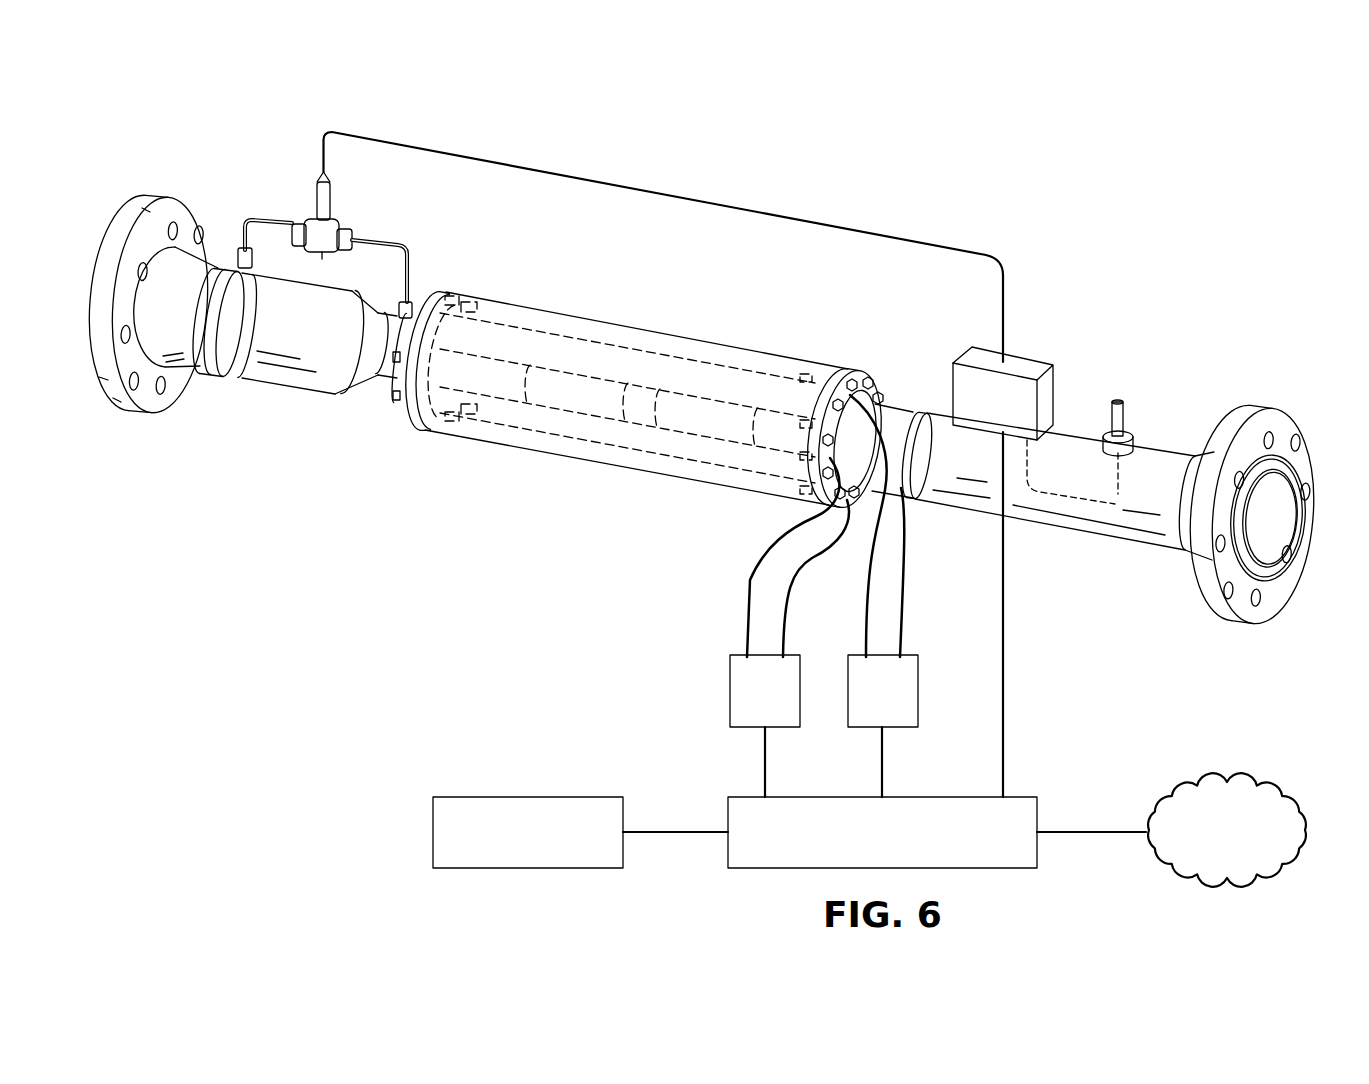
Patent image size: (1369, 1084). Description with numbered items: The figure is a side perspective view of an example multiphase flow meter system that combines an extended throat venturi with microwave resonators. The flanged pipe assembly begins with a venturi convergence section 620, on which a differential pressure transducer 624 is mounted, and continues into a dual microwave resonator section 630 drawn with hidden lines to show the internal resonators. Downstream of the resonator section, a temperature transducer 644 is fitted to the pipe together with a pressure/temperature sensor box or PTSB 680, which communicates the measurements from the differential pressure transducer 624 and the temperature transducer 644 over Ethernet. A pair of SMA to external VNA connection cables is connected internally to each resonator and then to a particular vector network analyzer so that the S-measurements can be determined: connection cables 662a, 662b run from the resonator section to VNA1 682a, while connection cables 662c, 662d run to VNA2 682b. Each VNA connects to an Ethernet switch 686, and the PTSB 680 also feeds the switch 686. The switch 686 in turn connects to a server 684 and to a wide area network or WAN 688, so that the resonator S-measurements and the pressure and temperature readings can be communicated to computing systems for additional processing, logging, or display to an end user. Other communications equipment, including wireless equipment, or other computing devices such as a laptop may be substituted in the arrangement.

The venturi convergence section 620 is at (421, 132).
The differential pressure transducer 624 is at (316, 197).
The dual microwave resonator section 630 is at (841, 352).
The temperature transducer 644 is at (1128, 413).
The SMA to external VNA connection cable 662a is at (745, 605).
The SMA to external VNA connection cable 662b is at (781, 619).
The SMA to external VNA connection cable 662c is at (870, 605).
The SMA to external VNA connection cable 662d is at (903, 622).
The pressure/temperature sensor box (PTSB) 680 is at (1032, 364).
The VNA1 682a is at (730, 688).
The VNA2 682b is at (912, 730).
The server 684 is at (528, 797).
The Ethernet switch 686 is at (840, 797).
The wide area network (WAN) 688 is at (1262, 782).